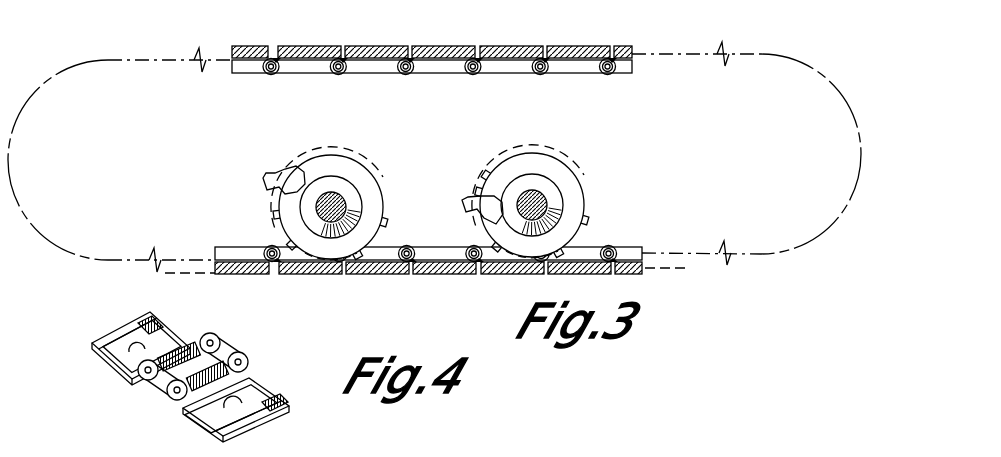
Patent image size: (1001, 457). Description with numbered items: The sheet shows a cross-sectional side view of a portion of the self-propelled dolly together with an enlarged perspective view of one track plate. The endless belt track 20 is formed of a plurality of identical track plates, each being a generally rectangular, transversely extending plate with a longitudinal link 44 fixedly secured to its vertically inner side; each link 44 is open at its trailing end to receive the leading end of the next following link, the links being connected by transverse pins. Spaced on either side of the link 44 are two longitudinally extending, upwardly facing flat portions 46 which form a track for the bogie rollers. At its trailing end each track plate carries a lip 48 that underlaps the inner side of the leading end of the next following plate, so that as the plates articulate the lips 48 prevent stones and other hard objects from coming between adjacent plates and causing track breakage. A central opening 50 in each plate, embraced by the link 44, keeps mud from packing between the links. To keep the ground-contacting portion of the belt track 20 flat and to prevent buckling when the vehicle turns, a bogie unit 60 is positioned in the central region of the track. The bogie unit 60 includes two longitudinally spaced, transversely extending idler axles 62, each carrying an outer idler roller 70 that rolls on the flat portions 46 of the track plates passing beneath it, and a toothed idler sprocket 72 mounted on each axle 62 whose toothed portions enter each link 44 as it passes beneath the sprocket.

In FIG. 3, the endless belt track 20 is at (453, 42).
In FIG. 3, the longitudinal link 44 is at (365, 69).
In FIG. 4, the longitudinal link 44 is at (242, 316).
In FIG. 4, the flat portion 46 is at (104, 334).
In FIG. 3, the lip 48 is at (544, 47).
In FIG. 4, the central opening 50 is at (137, 348).
In FIG. 3, the bogie unit 60 is at (620, 121).
In FIG. 3, the idler axle 62 is at (336, 202).
In FIG. 3, the outer idler roller 70 is at (369, 193).
In FIG. 3, the toothed idler sprocket 72 is at (368, 191).